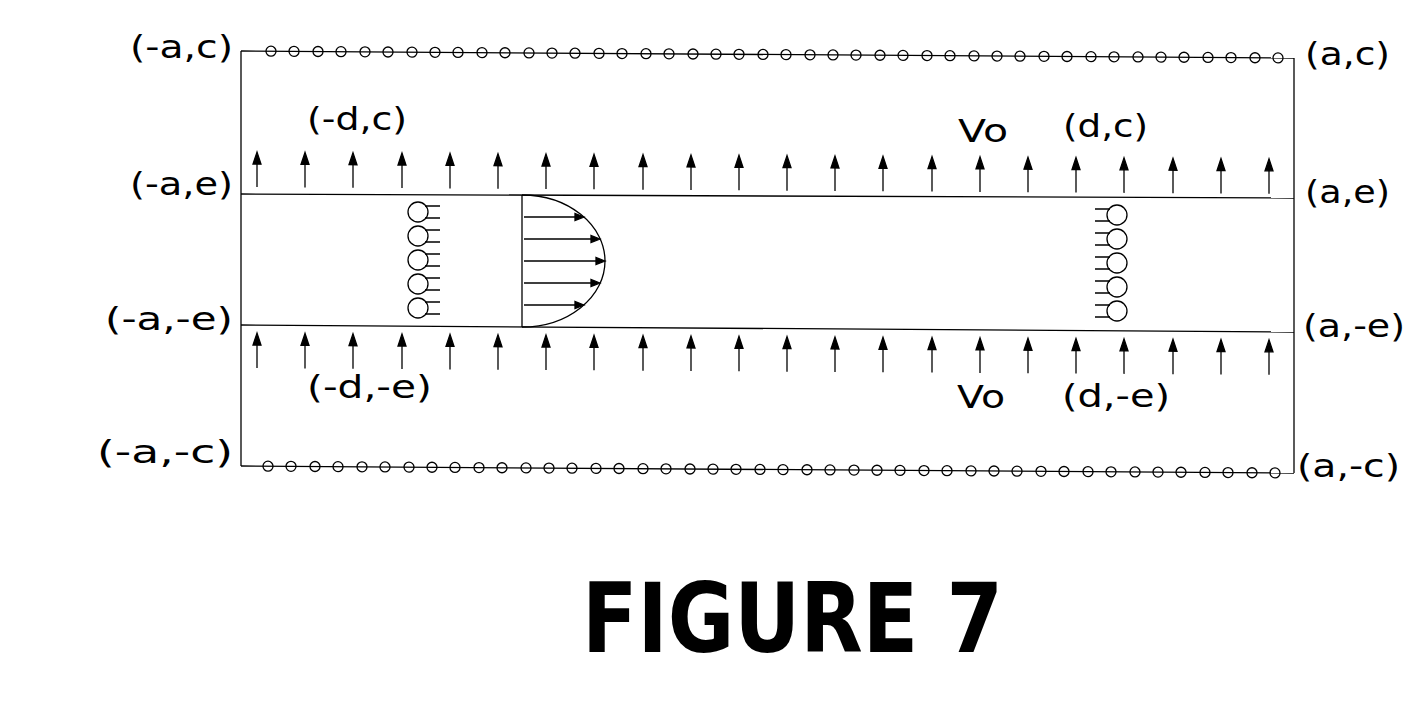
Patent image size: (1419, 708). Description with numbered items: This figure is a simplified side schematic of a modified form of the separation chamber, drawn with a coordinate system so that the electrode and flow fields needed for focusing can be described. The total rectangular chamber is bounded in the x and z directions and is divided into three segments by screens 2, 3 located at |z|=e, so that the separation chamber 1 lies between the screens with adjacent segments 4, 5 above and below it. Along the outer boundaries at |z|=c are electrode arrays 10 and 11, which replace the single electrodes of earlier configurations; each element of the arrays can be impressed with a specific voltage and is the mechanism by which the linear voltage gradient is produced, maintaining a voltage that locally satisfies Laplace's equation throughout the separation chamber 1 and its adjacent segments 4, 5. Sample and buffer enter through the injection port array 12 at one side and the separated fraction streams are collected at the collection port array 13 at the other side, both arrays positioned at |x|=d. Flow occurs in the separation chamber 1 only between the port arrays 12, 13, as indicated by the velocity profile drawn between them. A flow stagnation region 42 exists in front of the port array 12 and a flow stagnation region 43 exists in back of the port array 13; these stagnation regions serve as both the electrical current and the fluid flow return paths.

The separation chamber 1 is at (776, 278).
The screen 2 is at (867, 200).
The screen 3 is at (938, 328).
The adjacent segment 4 is at (763, 131).
The adjacent segment 5 is at (763, 394).
The electrode array 10 is at (1102, 70).
The electrode array 11 is at (410, 460).
The injection port array 12 is at (410, 250).
The collection port array 13 is at (1127, 252).
The flow stagnation region 42 is at (283, 275).
The flow stagnation region 43 is at (1258, 288).